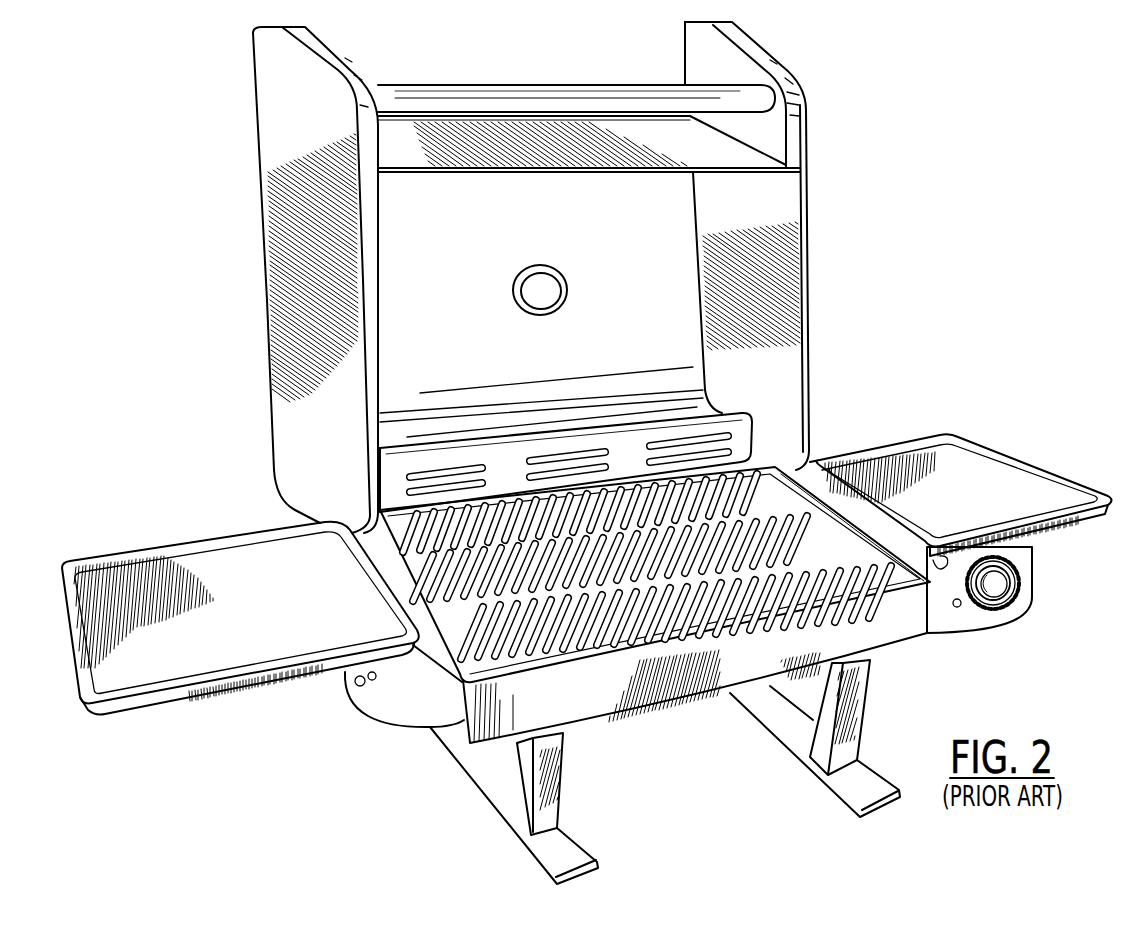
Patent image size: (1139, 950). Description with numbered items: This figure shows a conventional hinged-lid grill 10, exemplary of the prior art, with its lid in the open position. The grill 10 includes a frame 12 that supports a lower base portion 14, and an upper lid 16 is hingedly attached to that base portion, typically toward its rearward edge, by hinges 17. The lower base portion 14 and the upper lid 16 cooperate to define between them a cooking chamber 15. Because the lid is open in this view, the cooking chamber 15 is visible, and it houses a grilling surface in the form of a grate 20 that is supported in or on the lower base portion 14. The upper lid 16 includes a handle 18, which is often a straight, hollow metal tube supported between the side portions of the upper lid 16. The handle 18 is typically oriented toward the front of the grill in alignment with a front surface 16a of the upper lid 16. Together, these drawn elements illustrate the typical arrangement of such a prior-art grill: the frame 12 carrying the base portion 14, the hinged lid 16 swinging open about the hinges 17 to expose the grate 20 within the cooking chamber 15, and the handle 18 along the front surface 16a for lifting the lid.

The hinged-lid grill 10 is at (880, 288).
The frame 12 is at (850, 712).
The lower base portion 14 is at (485, 718).
The cooking chamber 15 is at (658, 570).
The upper lid 16 is at (773, 248).
The front surface of the upper lid 16a is at (717, 146).
The hinges 17 is at (368, 477).
The handle 18 is at (610, 96).
The grate 20 is at (775, 480).